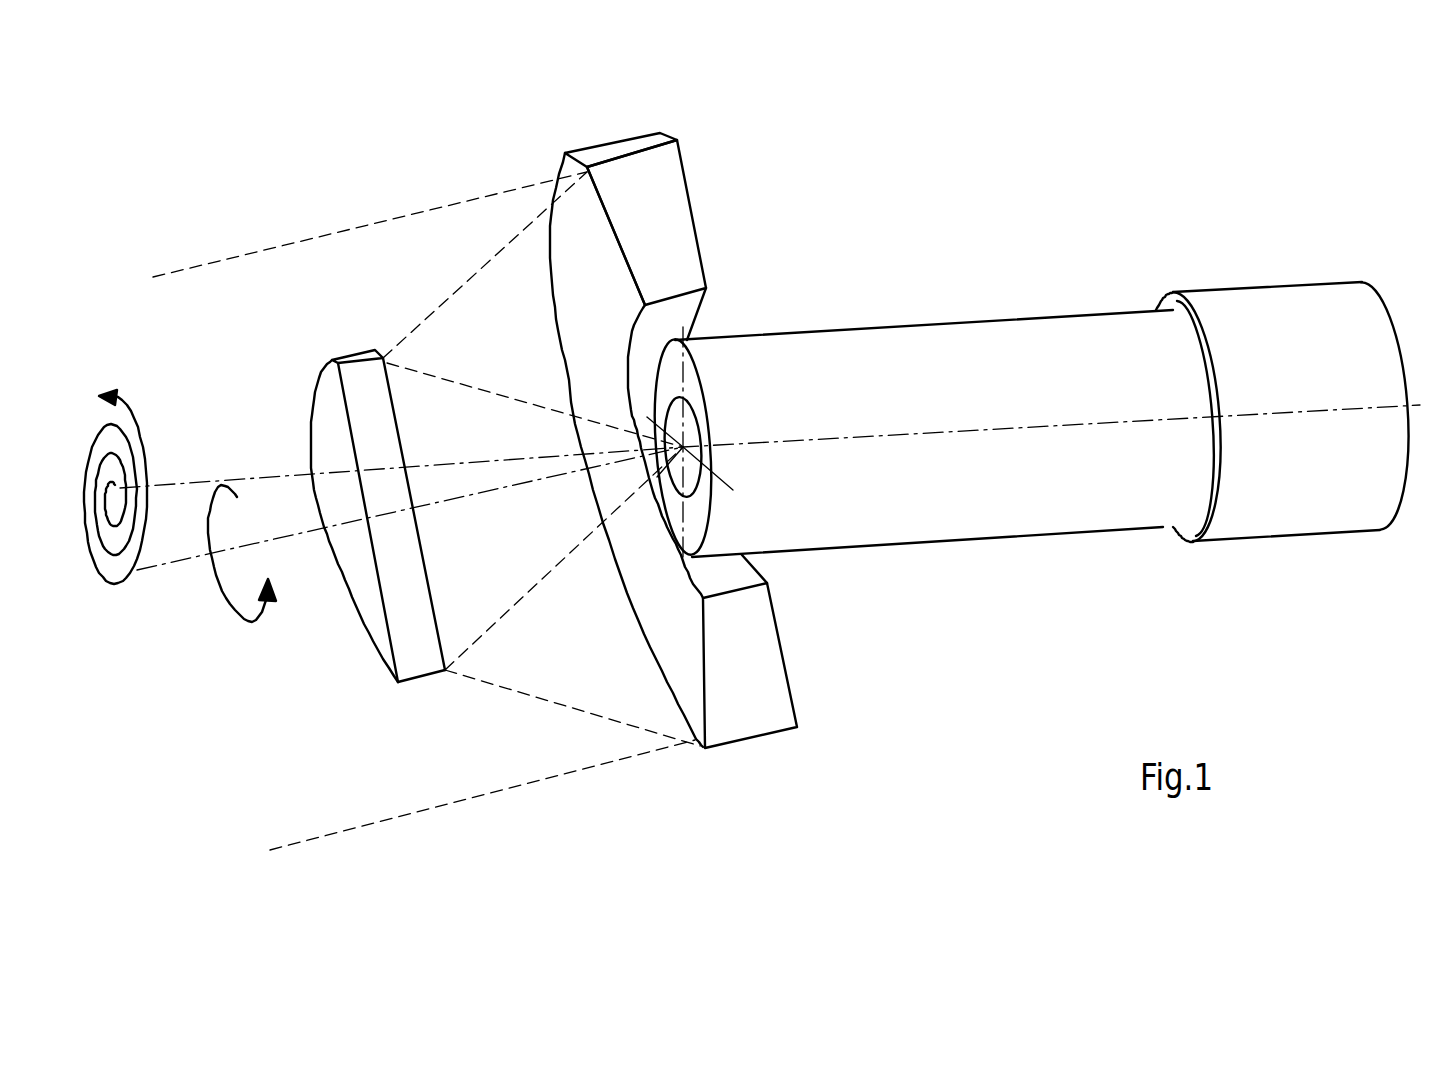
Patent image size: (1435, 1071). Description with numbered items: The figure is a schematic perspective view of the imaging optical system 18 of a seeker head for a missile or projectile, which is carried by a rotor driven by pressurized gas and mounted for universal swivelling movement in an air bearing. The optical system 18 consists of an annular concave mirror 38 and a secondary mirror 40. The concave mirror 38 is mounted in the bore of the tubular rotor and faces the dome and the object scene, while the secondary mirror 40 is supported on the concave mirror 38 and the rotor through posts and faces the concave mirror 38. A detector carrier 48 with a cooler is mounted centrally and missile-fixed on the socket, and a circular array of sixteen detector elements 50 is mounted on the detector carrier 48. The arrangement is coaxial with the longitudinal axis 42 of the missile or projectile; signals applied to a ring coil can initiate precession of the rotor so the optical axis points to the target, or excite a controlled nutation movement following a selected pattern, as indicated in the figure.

The imaging optical system 18 is at (566, 124).
The annular concave mirror 38 is at (677, 213).
The secondary mirror 40 is at (366, 380).
The longitudinal axis 42 is at (922, 433).
The detector carrier 48 is at (908, 345).
The detector elements 50 is at (700, 423).